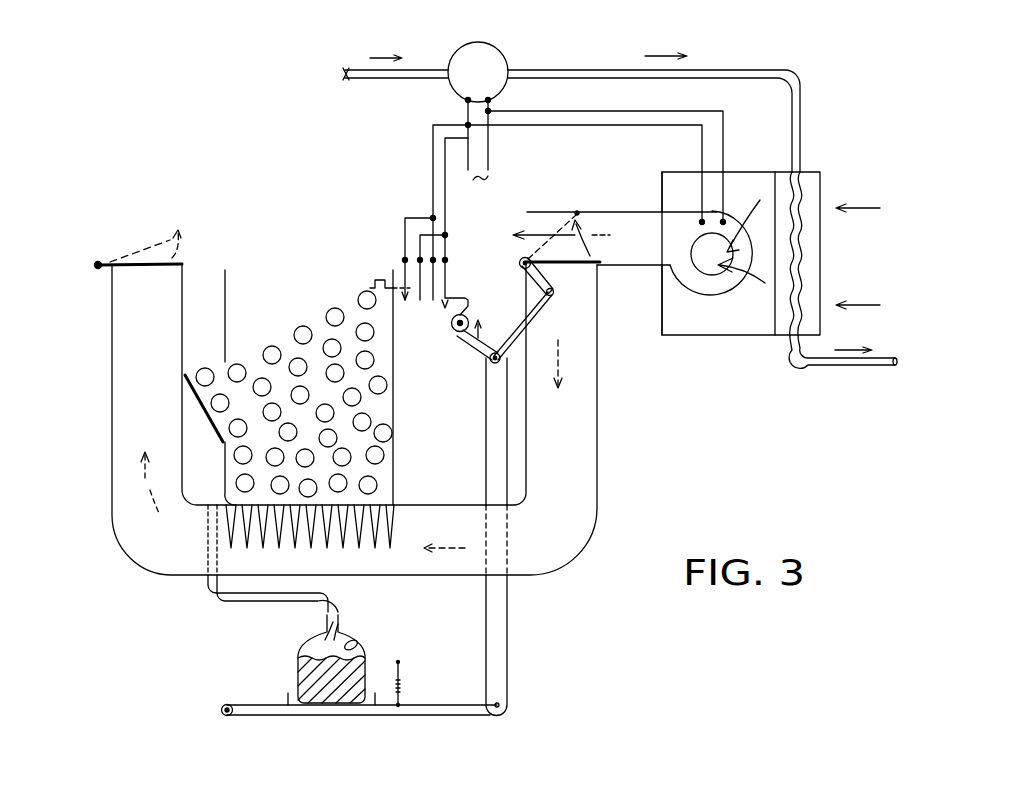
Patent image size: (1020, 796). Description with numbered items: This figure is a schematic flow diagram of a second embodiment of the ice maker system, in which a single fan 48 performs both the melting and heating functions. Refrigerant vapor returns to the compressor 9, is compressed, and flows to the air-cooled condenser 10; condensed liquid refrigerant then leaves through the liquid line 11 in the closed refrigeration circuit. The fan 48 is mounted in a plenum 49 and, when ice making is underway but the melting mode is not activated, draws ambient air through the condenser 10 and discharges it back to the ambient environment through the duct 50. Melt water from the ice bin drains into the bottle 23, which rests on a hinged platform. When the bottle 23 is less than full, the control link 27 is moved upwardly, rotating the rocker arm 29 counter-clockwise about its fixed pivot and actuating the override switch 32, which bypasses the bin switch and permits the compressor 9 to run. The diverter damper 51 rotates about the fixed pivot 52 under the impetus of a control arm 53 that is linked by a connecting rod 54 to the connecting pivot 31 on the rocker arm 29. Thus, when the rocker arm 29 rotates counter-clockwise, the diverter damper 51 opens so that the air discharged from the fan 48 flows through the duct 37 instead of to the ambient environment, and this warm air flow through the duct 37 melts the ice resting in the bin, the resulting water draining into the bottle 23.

The compressor 9 is at (505, 52).
The air-cooled condenser 10 is at (820, 172).
The liquid line 11 is at (836, 370).
The bottle 23 is at (298, 656).
The control link 27 is at (512, 628).
The rocker arm 29 is at (472, 344).
The connecting pivot 31 is at (482, 362).
The override switch 32 is at (448, 312).
The duct 37 is at (600, 420).
The fan 48 is at (713, 297).
The plenum 49 is at (740, 168).
The duct 50 is at (553, 212).
The diverter damper 51 is at (575, 267).
The fixed pivot 52 is at (516, 264).
The control arm 53 is at (530, 285).
The connecting rod 54 is at (510, 334).